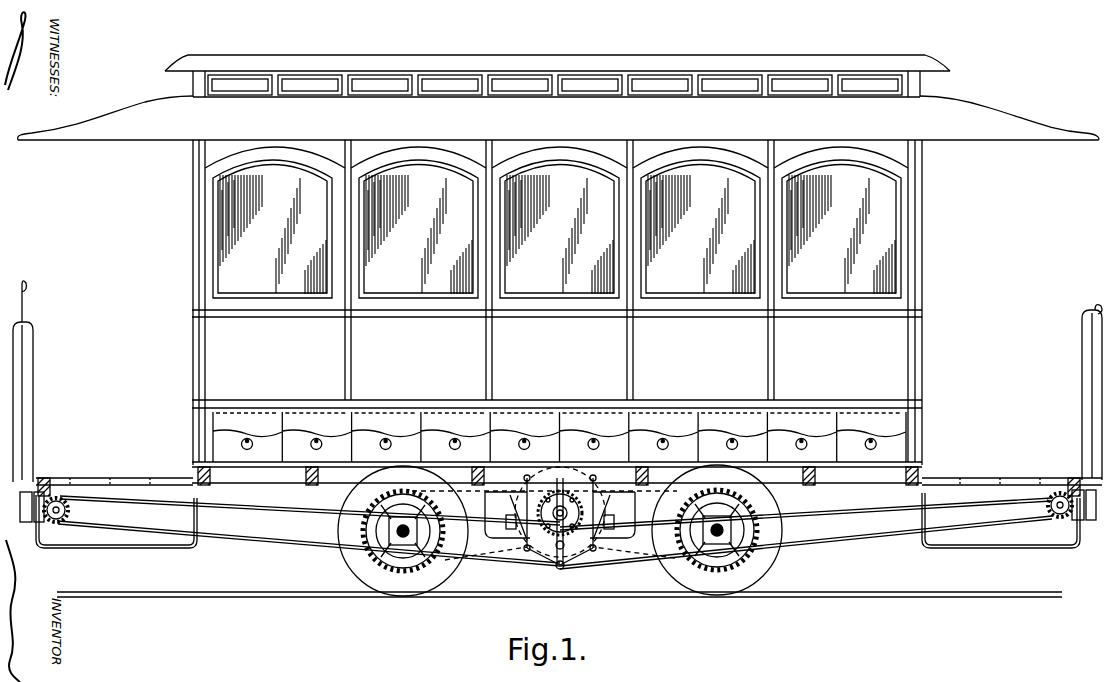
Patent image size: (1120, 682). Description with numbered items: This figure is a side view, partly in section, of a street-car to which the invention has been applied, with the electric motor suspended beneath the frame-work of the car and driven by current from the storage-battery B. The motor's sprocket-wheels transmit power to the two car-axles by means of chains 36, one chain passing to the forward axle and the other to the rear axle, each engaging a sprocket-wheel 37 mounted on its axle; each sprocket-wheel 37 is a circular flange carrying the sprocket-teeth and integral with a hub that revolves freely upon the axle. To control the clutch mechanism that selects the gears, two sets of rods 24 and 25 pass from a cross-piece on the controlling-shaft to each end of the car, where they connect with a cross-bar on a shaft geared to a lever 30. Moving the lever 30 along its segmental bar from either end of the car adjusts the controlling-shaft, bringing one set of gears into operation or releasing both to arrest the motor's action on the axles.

The lever 30 is at (33, 388).
The rod 24 is at (556, 513).
The rod 25 is at (555, 542).
The chain 36 is at (487, 560).
The sprocket-wheel 37 is at (409, 566).
The storage-battery B is at (559, 437).